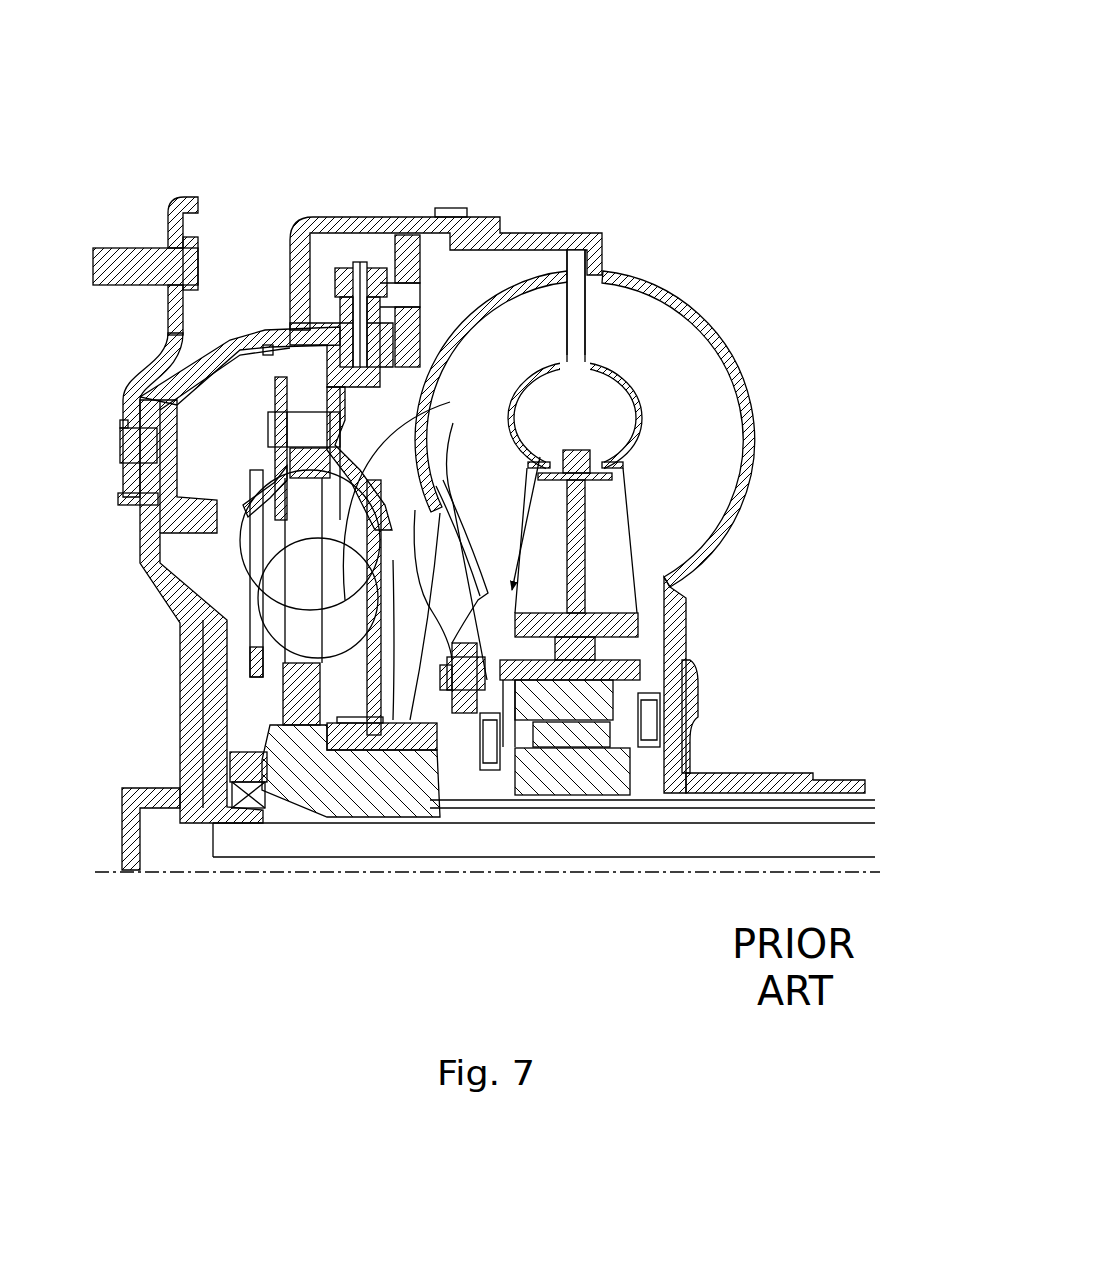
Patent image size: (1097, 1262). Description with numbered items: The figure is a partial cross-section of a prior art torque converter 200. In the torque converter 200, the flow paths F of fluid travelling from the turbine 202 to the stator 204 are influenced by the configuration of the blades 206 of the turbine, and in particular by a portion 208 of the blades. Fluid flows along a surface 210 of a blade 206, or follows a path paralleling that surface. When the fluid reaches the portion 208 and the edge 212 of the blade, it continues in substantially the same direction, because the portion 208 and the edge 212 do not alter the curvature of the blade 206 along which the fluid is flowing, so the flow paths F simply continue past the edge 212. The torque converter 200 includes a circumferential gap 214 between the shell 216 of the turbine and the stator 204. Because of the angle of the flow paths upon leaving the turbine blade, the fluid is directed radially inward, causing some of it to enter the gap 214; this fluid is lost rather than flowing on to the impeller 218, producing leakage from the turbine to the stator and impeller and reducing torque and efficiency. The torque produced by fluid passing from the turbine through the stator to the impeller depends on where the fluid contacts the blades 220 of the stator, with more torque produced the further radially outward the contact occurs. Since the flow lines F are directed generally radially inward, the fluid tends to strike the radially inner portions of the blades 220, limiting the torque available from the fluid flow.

The torque converter 200 is at (660, 108).
The turbine 202 is at (550, 270).
The stator 204 is at (605, 573).
The blades 206 is at (512, 325).
The portion 208 is at (600, 495).
The surface 210 is at (373, 480).
The edge 212 is at (625, 545).
The circumferential gap 214 is at (538, 743).
The shell 216 is at (468, 310).
The impeller 218 is at (707, 447).
The blades 220 is at (600, 588).
The flow paths F is at (505, 627).